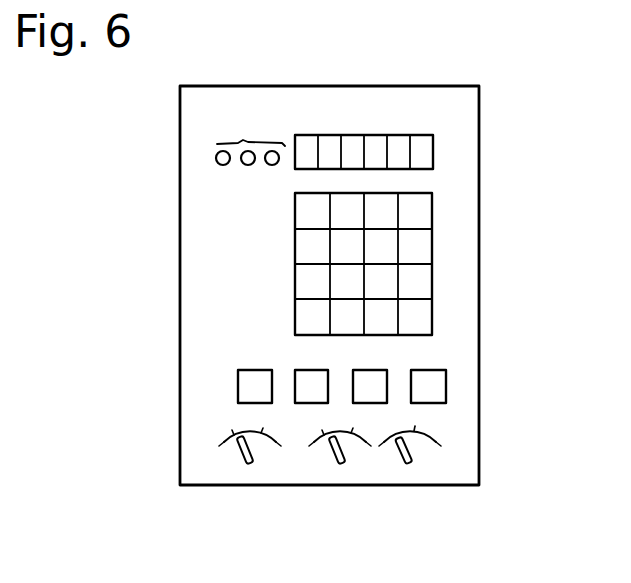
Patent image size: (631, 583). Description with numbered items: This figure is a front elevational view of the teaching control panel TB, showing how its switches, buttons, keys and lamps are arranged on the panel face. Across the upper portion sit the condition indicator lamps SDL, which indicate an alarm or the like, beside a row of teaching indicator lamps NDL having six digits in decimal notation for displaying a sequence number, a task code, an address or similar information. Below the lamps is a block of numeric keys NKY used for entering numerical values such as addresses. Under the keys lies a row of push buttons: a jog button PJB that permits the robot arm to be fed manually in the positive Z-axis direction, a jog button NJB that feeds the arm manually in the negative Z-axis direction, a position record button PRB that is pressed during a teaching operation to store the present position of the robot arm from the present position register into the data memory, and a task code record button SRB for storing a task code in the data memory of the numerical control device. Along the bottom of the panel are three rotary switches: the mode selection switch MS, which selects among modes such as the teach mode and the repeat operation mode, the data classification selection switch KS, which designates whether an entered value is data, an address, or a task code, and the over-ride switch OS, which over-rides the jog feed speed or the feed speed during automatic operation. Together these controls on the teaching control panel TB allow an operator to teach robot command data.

The teaching control panel TB is at (180, 462).
The condition indicator lamps SDL is at (241, 131).
The teaching indicator lamps NDL is at (433, 152).
The numeric keys NKY is at (432, 270).
The jog button PJB is at (238, 383).
The jog button NJB is at (303, 370).
The position record button PRB is at (370, 370).
The task code record button SRB is at (446, 382).
The mode selection switch MS is at (245, 467).
The data classification selection switch KS is at (338, 467).
The over-ride switch OS is at (405, 467).